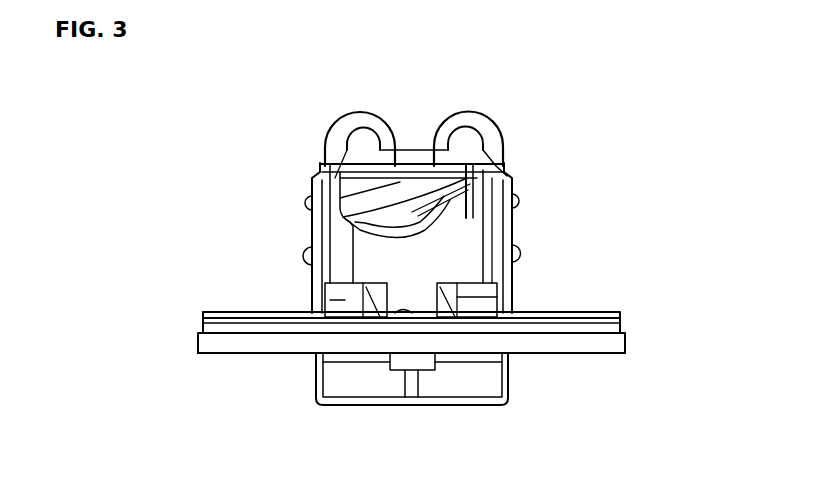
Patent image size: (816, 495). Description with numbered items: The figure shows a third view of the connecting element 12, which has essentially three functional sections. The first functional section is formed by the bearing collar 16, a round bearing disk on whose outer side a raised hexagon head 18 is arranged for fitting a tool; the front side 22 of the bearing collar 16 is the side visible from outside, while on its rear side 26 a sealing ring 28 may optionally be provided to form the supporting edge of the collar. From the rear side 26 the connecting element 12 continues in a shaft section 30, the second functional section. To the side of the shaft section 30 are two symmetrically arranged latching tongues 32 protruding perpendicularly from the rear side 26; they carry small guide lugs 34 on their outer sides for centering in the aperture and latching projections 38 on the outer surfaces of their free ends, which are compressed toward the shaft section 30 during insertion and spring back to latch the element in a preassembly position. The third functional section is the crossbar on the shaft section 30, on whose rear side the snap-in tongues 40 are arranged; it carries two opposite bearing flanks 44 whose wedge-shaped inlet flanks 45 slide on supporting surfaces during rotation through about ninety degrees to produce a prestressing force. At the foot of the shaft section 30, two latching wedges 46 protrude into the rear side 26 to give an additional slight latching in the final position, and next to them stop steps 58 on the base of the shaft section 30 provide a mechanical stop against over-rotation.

The connecting element 12 is at (120, 309).
The bearing collar 16 is at (608, 340).
The hexagon head 18 is at (497, 383).
The front side 22 is at (232, 362).
The rear side 26 is at (262, 302).
The sealing ring 28 is at (212, 328).
The shaft section 30 is at (440, 252).
The latching tongues 32 is at (514, 278).
The guide lugs 34 is at (519, 250).
The latching projections 38 is at (505, 203).
The snap-in tongues 40 is at (375, 108).
The bearing flanks 44 is at (372, 210).
The inlet flanks 45 is at (490, 158).
The latching wedges 46 is at (403, 313).
The stop steps 58 is at (338, 303).